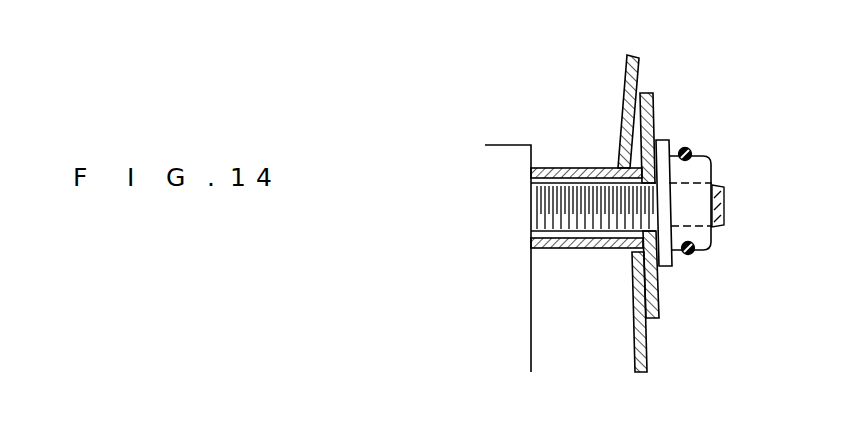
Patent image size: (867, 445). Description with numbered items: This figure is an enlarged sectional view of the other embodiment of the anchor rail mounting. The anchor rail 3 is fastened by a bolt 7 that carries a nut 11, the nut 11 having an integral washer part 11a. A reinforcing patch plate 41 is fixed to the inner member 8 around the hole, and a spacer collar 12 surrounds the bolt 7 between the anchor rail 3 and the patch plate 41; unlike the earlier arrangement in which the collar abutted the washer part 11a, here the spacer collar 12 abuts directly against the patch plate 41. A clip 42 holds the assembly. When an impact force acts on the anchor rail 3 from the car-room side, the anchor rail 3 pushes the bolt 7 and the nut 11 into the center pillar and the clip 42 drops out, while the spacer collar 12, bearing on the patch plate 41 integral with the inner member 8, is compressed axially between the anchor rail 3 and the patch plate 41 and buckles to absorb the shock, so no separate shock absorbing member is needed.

The anchor rail 3 is at (510, 154).
The bolt 7 is at (603, 232).
The inner member 8 is at (627, 78).
The nut 11 is at (712, 237).
The washer part 11a is at (663, 267).
The spacer collar 12 is at (589, 168).
The patch plate 41 is at (656, 108).
The clip 42 is at (691, 155).